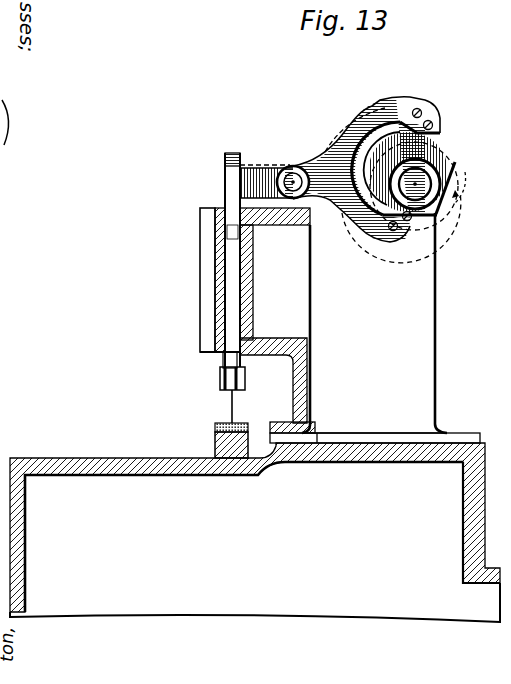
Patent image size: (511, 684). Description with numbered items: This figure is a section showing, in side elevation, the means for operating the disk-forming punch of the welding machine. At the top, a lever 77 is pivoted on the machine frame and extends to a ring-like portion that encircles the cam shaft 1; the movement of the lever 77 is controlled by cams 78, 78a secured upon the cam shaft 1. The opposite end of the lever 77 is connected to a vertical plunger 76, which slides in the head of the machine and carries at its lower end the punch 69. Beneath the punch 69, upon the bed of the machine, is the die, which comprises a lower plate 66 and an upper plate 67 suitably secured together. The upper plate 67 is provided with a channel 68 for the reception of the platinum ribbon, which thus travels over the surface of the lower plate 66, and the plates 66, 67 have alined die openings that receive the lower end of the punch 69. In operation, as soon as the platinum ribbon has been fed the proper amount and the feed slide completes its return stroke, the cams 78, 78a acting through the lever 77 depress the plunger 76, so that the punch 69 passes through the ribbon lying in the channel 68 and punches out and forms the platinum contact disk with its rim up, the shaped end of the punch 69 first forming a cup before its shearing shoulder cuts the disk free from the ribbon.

The cam shaft 1 is at (430, 182).
The lower plate 66 is at (216, 426).
The upper plate 67 is at (222, 424).
The channel 68 is at (232, 423).
The punch 69 is at (235, 418).
The plunger 76 is at (236, 303).
The lever 77 is at (326, 163).
The cam 78 is at (455, 162).
The cam 78a is at (400, 150).